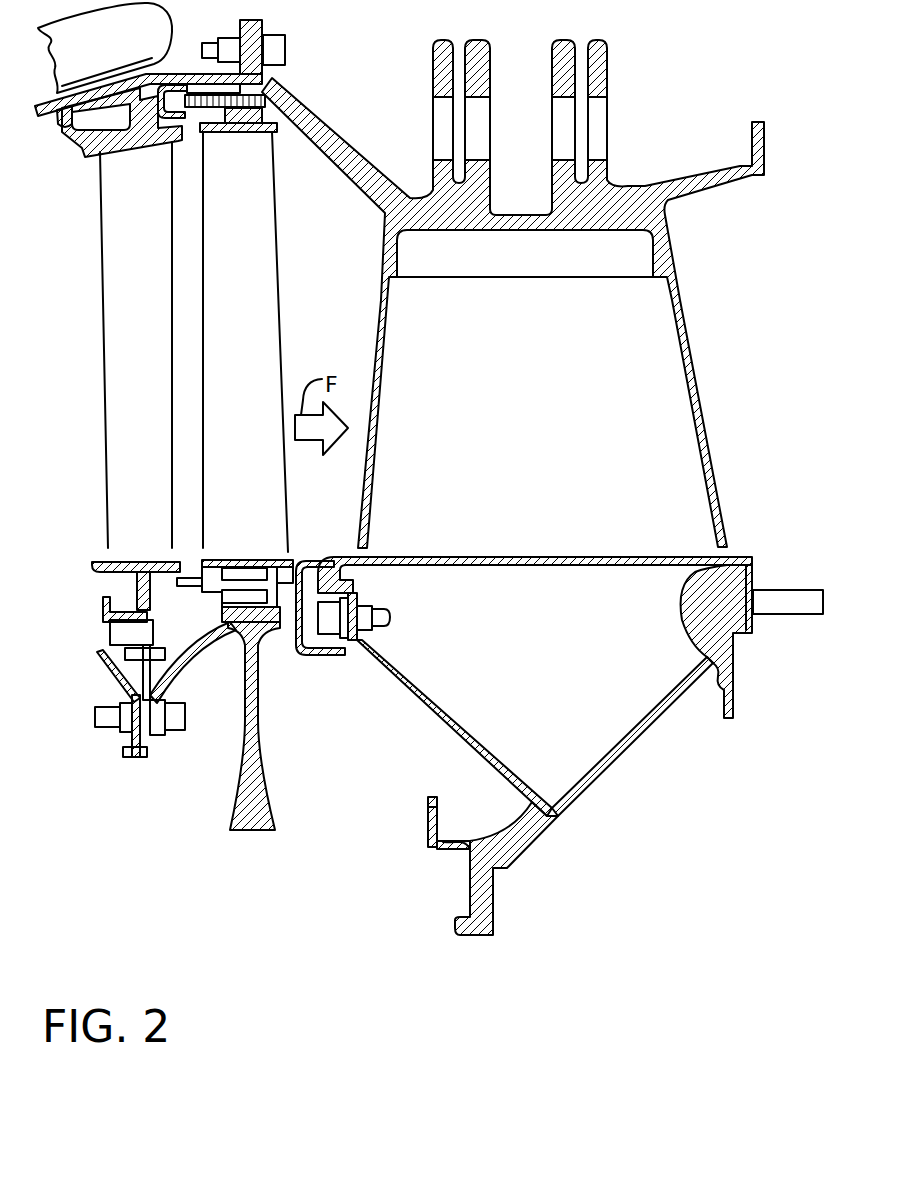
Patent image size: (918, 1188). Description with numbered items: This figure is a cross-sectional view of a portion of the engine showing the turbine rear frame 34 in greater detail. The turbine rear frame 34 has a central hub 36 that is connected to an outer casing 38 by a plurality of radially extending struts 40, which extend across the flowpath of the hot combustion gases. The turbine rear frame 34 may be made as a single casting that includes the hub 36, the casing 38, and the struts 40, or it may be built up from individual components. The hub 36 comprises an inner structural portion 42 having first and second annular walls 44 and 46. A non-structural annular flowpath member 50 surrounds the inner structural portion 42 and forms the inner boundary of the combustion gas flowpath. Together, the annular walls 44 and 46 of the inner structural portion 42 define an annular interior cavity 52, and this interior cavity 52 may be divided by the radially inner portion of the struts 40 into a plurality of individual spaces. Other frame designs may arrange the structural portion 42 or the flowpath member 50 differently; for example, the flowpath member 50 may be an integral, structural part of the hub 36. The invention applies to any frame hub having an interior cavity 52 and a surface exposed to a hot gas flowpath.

The turbine rear frame 34 is at (542, 487).
The central hub 36 is at (733, 557).
The outer casing 38 is at (632, 186).
The radially extending struts 40 is at (546, 411).
The inner structural portion 42 is at (553, 807).
The first annular wall 44 is at (440, 712).
The second annular wall 46 is at (628, 738).
The annular flowpath member 50 is at (512, 556).
The annular interior cavity 52 is at (549, 659).